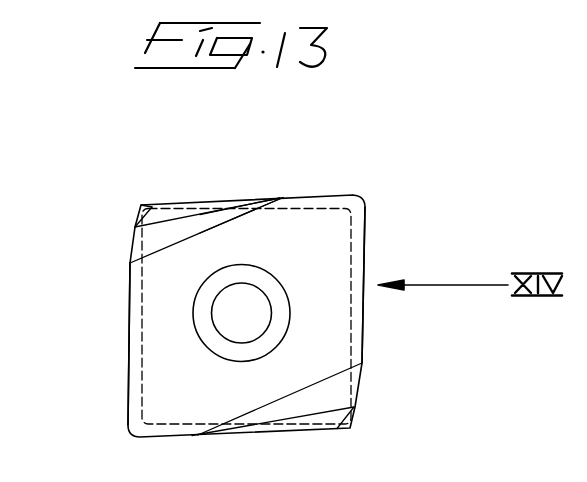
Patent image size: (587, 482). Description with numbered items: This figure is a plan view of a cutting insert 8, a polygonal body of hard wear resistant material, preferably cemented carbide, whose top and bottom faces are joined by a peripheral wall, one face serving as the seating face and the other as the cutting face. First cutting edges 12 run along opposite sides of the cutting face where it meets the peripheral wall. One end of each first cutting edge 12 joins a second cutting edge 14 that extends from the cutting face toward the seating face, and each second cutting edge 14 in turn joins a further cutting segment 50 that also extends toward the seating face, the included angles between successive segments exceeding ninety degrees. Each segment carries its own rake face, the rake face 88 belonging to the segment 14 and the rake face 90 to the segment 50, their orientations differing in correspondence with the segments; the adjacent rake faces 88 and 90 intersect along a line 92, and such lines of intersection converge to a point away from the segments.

The cutting insert 8 is at (312, 233).
The first cutting edge 12 is at (365, 235).
The second cutting edge 14 is at (132, 245).
The cutting segment 50 is at (138, 210).
The rake face 88 is at (222, 218).
The rake face 90 is at (168, 213).
The intersection of rake faces 92 is at (145, 205).